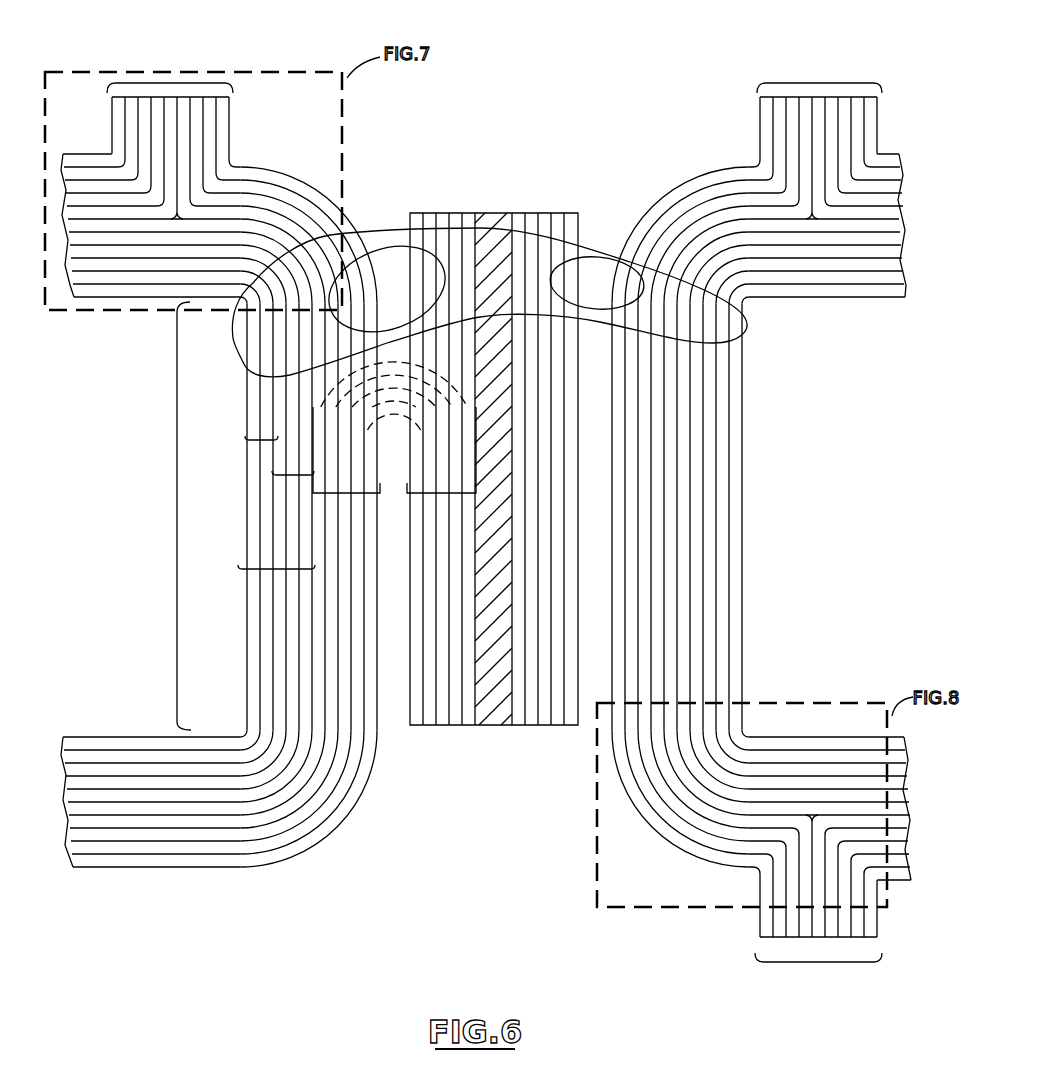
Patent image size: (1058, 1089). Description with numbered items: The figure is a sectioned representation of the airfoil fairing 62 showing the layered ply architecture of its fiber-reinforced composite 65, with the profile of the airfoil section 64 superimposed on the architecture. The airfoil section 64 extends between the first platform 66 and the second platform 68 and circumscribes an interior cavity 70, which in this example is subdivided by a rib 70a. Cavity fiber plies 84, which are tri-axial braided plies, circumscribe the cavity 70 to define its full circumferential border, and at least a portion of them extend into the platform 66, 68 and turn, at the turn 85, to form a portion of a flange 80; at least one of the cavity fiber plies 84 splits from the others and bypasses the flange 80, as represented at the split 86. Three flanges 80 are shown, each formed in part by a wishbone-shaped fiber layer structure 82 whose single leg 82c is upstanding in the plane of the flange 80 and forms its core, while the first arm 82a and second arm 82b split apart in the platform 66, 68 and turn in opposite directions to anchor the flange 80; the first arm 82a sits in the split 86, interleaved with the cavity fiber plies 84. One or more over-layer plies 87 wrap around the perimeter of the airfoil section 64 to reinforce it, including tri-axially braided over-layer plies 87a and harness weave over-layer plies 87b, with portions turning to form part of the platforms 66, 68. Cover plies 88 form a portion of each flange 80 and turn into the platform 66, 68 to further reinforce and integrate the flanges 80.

The airfoil fairing 62 is at (231, 890).
The airfoil section 64 is at (176, 512).
The fiber-reinforced composite 65 is at (309, 170).
The first platform 66 is at (166, 310).
The second platform 68 is at (131, 728).
The interior cavity 70 is at (393, 258).
The rib 70a is at (498, 314).
The flange 80 is at (168, 83).
The wishbone-shaped fiber layer structure 82 is at (196, 172).
The first arm 82a is at (231, 204).
The second arm 82b is at (102, 197).
The single leg 82c is at (178, 113).
The cavity fiber plies 84 is at (442, 496).
The turn of cavity fiber plies 85 is at (236, 162).
The split of cavity fiber plies 86 is at (172, 224).
The over-layer plies 87 is at (266, 575).
The tri-axially braided over-layer plies 87a is at (279, 478).
The harness weave over-layer plies 87b is at (254, 442).
The cover plies 88 is at (222, 115).